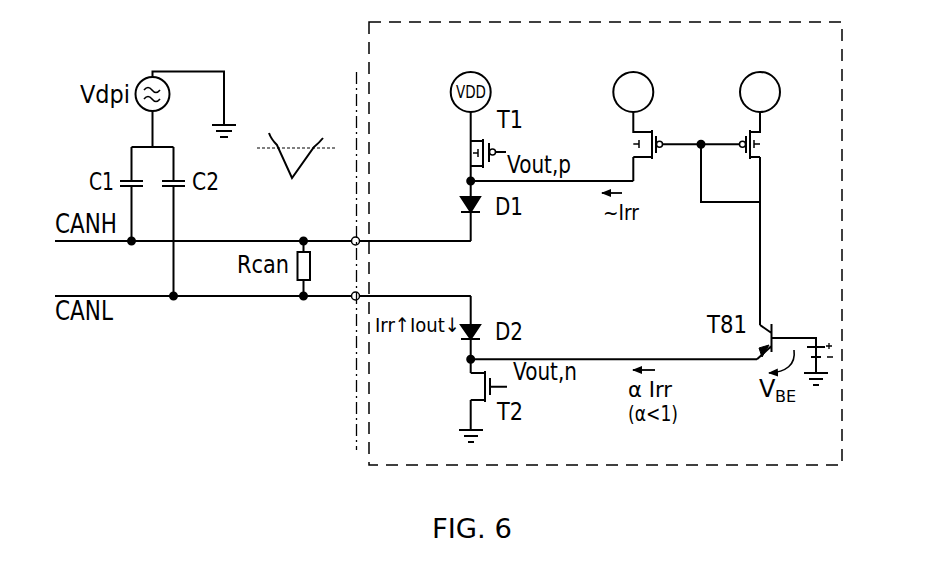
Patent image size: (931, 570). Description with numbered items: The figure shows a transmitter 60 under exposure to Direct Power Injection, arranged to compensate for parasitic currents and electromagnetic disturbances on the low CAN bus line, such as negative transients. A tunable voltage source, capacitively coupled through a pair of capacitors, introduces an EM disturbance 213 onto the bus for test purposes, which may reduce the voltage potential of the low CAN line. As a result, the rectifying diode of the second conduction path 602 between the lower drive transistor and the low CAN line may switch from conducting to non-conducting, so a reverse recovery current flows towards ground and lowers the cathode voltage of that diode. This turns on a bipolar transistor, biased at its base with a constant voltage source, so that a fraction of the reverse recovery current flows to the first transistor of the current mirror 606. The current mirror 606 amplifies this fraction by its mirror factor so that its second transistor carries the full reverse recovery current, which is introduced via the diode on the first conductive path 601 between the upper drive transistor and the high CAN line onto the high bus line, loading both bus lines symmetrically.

The EM disturbance 213 is at (293, 124).
The transmitter 60 is at (618, 465).
The first conductive path 601 is at (445, 231).
The second conduction path 602 is at (445, 287).
The current mirror 606 is at (722, 54).